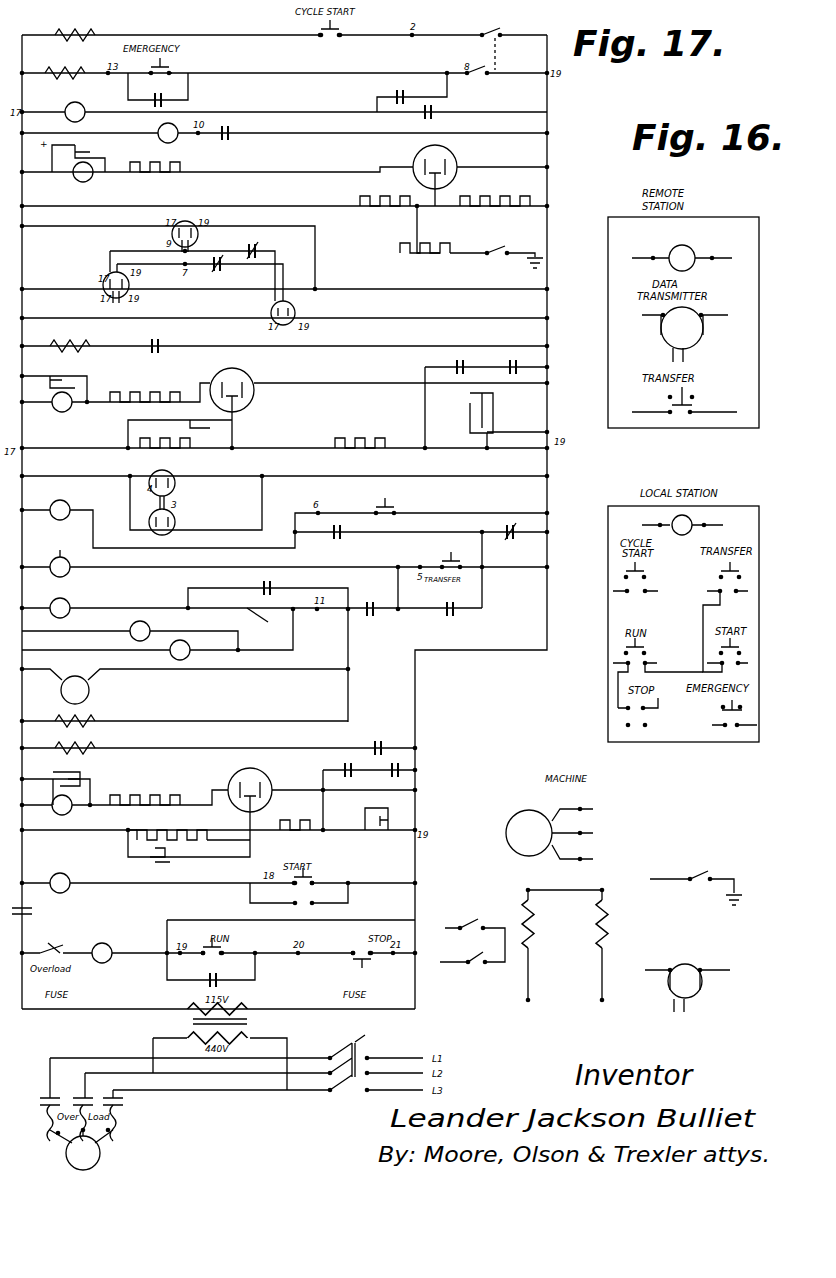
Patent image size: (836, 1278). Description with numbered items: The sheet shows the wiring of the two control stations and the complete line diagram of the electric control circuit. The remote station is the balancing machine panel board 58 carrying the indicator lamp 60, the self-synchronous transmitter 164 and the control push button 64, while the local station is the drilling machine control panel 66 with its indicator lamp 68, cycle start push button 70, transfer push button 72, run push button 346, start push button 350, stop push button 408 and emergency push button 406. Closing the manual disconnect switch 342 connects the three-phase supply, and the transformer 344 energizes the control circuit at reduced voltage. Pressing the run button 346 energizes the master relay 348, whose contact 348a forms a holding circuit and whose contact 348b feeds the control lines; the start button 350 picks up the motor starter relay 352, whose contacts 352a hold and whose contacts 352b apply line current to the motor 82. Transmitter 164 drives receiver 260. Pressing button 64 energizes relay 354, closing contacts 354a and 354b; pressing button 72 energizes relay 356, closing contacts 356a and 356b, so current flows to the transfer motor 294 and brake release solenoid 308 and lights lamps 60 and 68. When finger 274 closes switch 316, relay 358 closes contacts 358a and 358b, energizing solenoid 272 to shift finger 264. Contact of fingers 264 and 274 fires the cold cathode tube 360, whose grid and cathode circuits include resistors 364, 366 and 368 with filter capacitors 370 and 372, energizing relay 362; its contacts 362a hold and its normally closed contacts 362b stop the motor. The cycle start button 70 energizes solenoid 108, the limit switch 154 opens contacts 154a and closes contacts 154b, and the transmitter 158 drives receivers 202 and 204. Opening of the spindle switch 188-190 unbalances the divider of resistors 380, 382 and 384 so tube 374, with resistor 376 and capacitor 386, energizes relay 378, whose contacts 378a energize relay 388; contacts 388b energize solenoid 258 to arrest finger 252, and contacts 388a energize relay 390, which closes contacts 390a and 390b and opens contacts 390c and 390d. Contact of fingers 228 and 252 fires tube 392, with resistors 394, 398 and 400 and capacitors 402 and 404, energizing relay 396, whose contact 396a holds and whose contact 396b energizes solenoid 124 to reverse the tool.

In FIG. 16, the panel board 58 is at (608, 230).
In FIG. 17, the indicator lamp 60 is at (145, 620).
In FIG. 16, the indicator lamp 60 is at (690, 248).
In FIG. 17, the control push button 64 is at (375, 508).
In FIG. 16, the control push button 64 is at (700, 404).
In FIG. 16, the control panel 66 is at (608, 515).
In FIG. 17, the indicator lamp 68 is at (183, 660).
In FIG. 16, the indicator lamp 68 is at (695, 532).
In FIG. 17, the cycle start push button 70 is at (335, 40).
In FIG. 16, the cycle start push button 70 is at (613, 591).
In FIG. 17, the transfer push button 72 is at (440, 558).
In FIG. 16, the transfer push button 72 is at (707, 591).
In FIG. 17, the motor 82 is at (90, 1158).
In FIG. 17, the solenoid 108 is at (95, 33).
In FIG. 17, the solenoid 124 is at (100, 55).
In FIG. 17, the limit switch 154 is at (488, 60).
In FIG. 17, the limit switch contacts 154a is at (505, 20).
In FIG. 17, the limit switch contacts 154b is at (490, 82).
In FIG. 17, the Selsyn transmitter 158 is at (195, 218).
In FIG. 17, the self-synchronous transmitter 164 is at (175, 476).
In FIG. 16, the self-synchronous transmitter 164 is at (665, 342).
In FIG. 17, the spindle switch 188-190 is at (490, 270).
In FIG. 17, the receiver 202 is at (105, 272).
In FIG. 17, the receiver 204 is at (272, 310).
In FIG. 17, the contact finger 228 is at (465, 405).
In FIG. 17, the contact finger 252 is at (495, 405).
In FIG. 17, the solenoid 258 is at (62, 340).
In FIG. 17, the receiver 260 is at (180, 515).
In FIG. 17, the contact finger 264 is at (362, 815).
In FIG. 17, the solenoid 272 is at (100, 745).
In FIG. 17, the contact finger 274 is at (392, 818).
In FIG. 17, the transfer motor 294 is at (90, 690).
In FIG. 17, the brake release solenoid 308 is at (100, 718).
In FIG. 17, the switch 316 is at (250, 600).
In FIG. 17, the manual disconnect switch 342 is at (350, 1090).
In FIG. 17, the transformer 344 is at (190, 1027).
In FIG. 17, the run push button 346 is at (205, 938).
In FIG. 16, the run push button 346 is at (613, 663).
In FIG. 17, the master relay 348 is at (115, 935).
In FIG. 17, the master relay contact 348a is at (225, 975).
In FIG. 17, the master relay contact 348b is at (35, 912).
In FIG. 17, the start push button 350 is at (320, 872).
In FIG. 16, the start push button 350 is at (707, 663).
In FIG. 17, the motor starter relay 352 is at (58, 873).
In FIG. 17, the motor starter contacts 352a is at (305, 912).
In FIG. 17, the motor starter contacts 352b is at (80, 1095).
In FIG. 17, the relay 354 is at (72, 492).
In FIG. 17, the relay contact 354a is at (340, 540).
In FIG. 17, the relay contact 354b is at (372, 618).
In FIG. 17, the relay 356 is at (56, 555).
In FIG. 17, the relay contact 356a is at (452, 618).
In FIG. 17, the relay contact 356b is at (400, 762).
In FIG. 17, the relay 358 is at (65, 600).
In FIG. 17, the relay contact 358a is at (280, 562).
In FIG. 17, the relay contact 358b is at (380, 738).
In FIG. 17, the cold cathode gaseous discharge tube 360 is at (265, 772).
In FIG. 17, the relay 362 is at (64, 815).
In FIG. 17, the relay contact 362a is at (348, 760).
In FIG. 17, the normally closed contacts 362b is at (508, 543).
In FIG. 17, the resistor 364 is at (195, 845).
In FIG. 17, the resistor 366 is at (155, 795).
In FIG. 17, the resistor 368 is at (290, 822).
In FIG. 17, the capacitor 370 is at (82, 775).
In FIG. 17, the capacitor 372 is at (150, 865).
In FIG. 17, the cold cathode gaseous discharge tube 374 is at (413, 152).
In FIG. 17, the current limiting resistor 376 is at (180, 165).
In FIG. 17, the control relay 378 is at (83, 182).
In FIG. 17, the relay contacts 378a is at (228, 143).
In FIG. 17, the resistor 380 is at (357, 200).
In FIG. 17, the resistor 382 is at (480, 198).
In FIG. 17, the resistor 384 is at (440, 258).
In FIG. 17, the capacitor 386 is at (95, 150).
In FIG. 17, the relay 388 is at (175, 124).
In FIG. 17, the relay contact 388a is at (395, 100).
In FIG. 17, the relay contact 388b is at (158, 338).
In FIG. 17, the relay 390 is at (61, 105).
In FIG. 17, the relay contact 390a is at (430, 125).
In FIG. 17, the relay contact 390b is at (505, 357).
In FIG. 17, the normally closed contact 390c is at (215, 275).
In FIG. 17, the normally closed contact 390d is at (258, 243).
In FIG. 17, the cold cathode gaseous discharge tube 392 is at (250, 372).
In FIG. 17, the resistor 394 is at (145, 392).
In FIG. 17, the control relay 396 is at (60, 412).
In FIG. 17, the relay contact 396a is at (455, 360).
In FIG. 17, the relay contact 396b is at (158, 90).
In FIG. 17, the resistor 398 is at (175, 440).
In FIG. 17, the resistor 400 is at (355, 440).
In FIG. 17, the capacitor 402 is at (70, 372).
In FIG. 17, the capacitor 404 is at (215, 420).
In FIG. 17, the emergency push button 406 is at (172, 71).
In FIG. 16, the emergency push button 406 is at (730, 715).
In FIG. 17, the stop push button 408 is at (355, 948).
In FIG. 16, the stop push button 408 is at (628, 712).